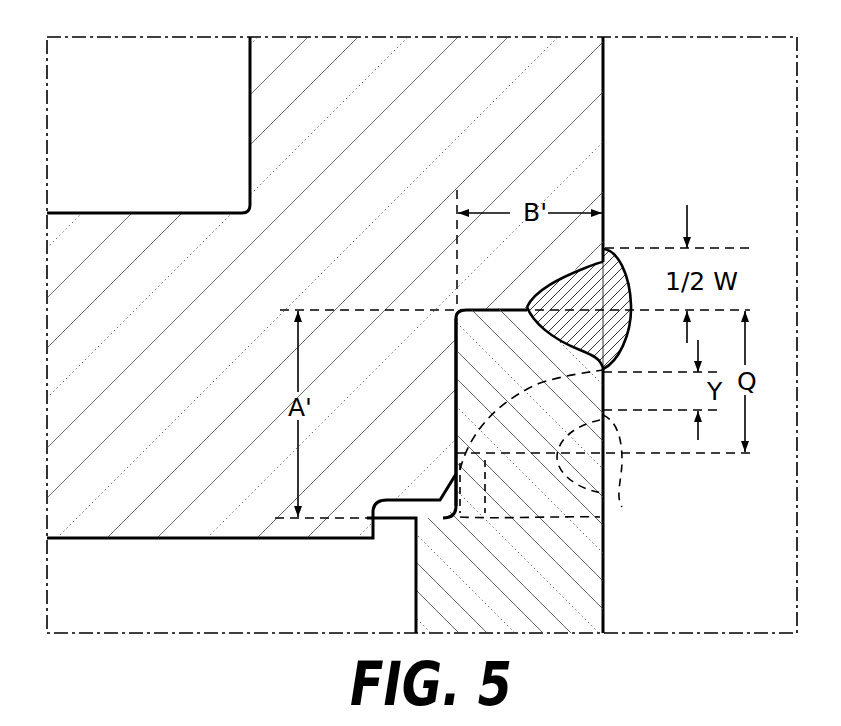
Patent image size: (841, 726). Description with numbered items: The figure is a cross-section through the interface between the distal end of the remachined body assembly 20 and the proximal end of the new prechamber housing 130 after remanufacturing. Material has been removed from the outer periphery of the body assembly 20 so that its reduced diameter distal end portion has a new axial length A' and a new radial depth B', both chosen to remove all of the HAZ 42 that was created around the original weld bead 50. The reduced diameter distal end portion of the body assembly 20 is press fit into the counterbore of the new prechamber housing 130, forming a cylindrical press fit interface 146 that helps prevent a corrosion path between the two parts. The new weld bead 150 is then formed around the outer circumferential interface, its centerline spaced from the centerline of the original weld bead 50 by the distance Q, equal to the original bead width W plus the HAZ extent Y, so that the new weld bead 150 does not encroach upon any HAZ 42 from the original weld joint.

The body assembly 20 is at (573, 87).
The new weld bead 150 is at (628, 265).
The cylindrical press fit interface 146 is at (456, 400).
The HAZ 42 is at (522, 400).
The original weld bead 50 is at (622, 507).
The new prechamber housing 130 is at (582, 608).